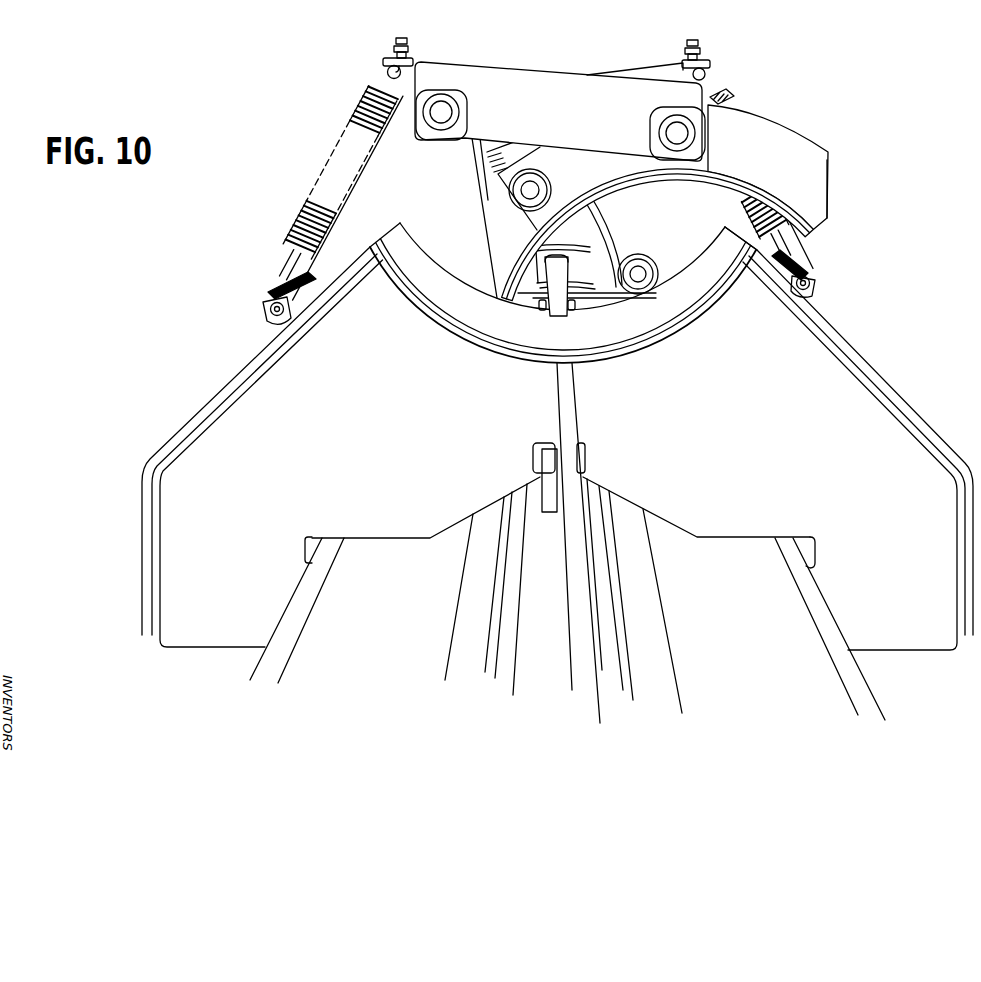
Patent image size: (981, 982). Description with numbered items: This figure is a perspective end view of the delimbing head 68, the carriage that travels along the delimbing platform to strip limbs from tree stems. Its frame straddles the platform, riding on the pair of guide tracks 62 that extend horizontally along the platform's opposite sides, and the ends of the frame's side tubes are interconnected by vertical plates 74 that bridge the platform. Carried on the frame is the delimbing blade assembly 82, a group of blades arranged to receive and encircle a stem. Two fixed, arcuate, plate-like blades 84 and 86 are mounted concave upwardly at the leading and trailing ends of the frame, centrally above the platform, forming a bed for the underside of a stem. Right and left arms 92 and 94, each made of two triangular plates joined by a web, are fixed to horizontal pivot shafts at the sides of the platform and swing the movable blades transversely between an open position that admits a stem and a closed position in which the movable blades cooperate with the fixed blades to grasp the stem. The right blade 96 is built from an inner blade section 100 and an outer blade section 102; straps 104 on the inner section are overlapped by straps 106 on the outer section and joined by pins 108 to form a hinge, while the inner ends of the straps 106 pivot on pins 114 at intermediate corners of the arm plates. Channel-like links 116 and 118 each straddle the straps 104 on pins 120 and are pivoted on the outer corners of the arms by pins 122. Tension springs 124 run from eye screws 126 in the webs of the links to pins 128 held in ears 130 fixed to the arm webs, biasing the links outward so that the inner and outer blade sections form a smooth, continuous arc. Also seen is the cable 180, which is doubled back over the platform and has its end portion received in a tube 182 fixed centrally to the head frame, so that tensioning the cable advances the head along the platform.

The guide tracks 62 is at (287, 630).
The delimbing head 68 is at (847, 332).
The vertical plates 74 is at (402, 386).
The delimbing blade assembly 82 is at (685, 199).
The arcuate plate-like blade 84 is at (552, 343).
The arcuate plate-like blade 86 is at (590, 250).
The right arm 92 is at (482, 216).
The left arm 94 is at (618, 229).
The right blade 96 is at (788, 125).
The inner blade section 100 is at (672, 187).
The outer blade section 102 is at (564, 205).
The straps 104 is at (818, 173).
The straps 106 is at (500, 235).
The pins 108 is at (522, 190).
The pins 114 is at (641, 272).
The channel-like link 116 is at (560, 98).
The channel-like link 118 is at (640, 73).
The pins 120 is at (667, 133).
The pins 122 is at (445, 112).
The tension springs 124 is at (357, 103).
The eye screw 126 is at (405, 40).
The pins 128 is at (265, 326).
The ears 130 is at (267, 298).
The cable 180 is at (575, 410).
The tube 182 is at (555, 307).